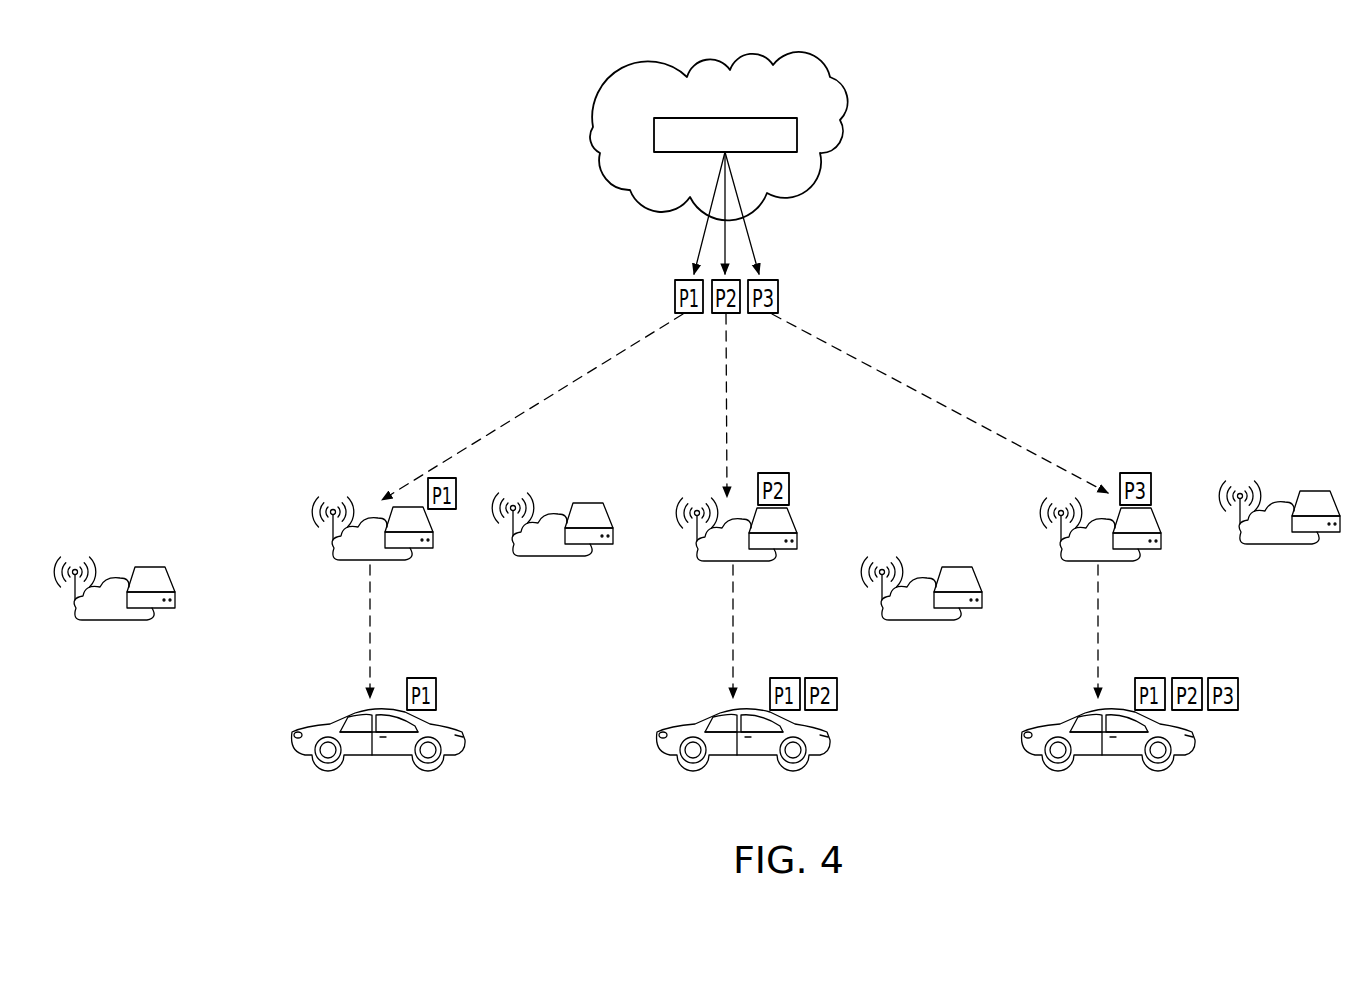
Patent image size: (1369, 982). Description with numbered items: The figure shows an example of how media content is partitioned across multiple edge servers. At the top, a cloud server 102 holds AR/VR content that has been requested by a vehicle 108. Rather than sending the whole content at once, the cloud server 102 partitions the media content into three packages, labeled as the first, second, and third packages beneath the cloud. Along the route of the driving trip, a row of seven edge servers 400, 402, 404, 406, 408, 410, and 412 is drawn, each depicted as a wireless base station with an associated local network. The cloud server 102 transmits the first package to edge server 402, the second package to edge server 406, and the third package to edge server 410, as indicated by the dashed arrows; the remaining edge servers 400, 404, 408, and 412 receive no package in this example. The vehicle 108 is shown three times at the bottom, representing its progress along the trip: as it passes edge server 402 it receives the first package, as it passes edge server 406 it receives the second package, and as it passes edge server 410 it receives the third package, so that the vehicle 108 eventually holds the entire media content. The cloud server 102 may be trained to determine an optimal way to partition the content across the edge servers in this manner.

The cloud server 102 is at (858, 130).
The vehicle 108 is at (360, 760).
The edge server 400 is at (150, 575).
The edge server 402 is at (422, 534).
The edge server 404 is at (592, 510).
The edge server 406 is at (783, 527).
The edge server 408 is at (963, 584).
The edge server 410 is at (1139, 527).
The edge server 412 is at (1318, 493).